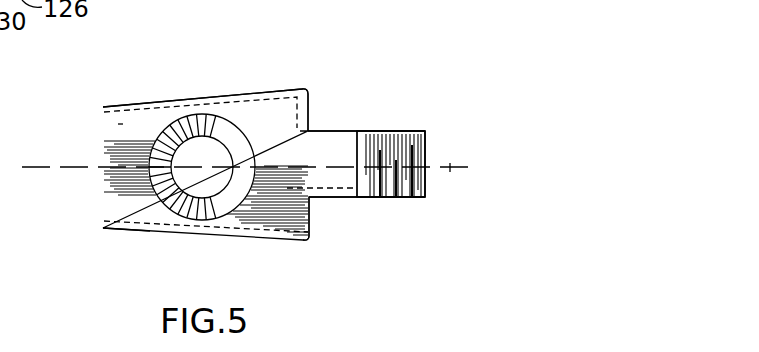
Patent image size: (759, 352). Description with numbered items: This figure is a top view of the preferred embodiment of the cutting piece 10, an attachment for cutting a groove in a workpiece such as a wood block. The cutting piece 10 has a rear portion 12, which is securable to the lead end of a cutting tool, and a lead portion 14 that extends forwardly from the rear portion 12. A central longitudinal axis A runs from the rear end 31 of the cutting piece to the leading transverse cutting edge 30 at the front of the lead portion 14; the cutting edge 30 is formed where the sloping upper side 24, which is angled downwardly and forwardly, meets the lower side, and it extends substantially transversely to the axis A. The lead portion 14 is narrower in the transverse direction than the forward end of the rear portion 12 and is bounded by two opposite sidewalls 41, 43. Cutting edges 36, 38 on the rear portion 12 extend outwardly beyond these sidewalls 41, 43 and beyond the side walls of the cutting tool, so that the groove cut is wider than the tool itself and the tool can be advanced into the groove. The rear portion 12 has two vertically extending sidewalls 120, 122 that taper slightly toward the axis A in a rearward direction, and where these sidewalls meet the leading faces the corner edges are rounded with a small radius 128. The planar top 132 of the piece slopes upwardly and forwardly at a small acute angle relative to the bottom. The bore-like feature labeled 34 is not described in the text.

The cutting piece 10 is at (243, 88).
The rear portion 12 is at (147, 237).
The lead portion 14 is at (328, 131).
The sloping upper side 24 is at (403, 133).
The leading transverse cutting edge 30 is at (428, 160).
The rear end 31 is at (103, 150).
The bore 34 is at (199, 136).
The cutting edge 36 is at (310, 222).
The cutting edge 38 is at (310, 93).
The sidewall of lead portion 41 is at (377, 133).
The sidewall of lead portion 43 is at (383, 198).
The sidewall 120 is at (140, 102).
The sidewall 122 is at (124, 232).
The small radius 128 is at (307, 91).
The top 132 is at (284, 230).
The central longitudinal axis A is at (452, 168).